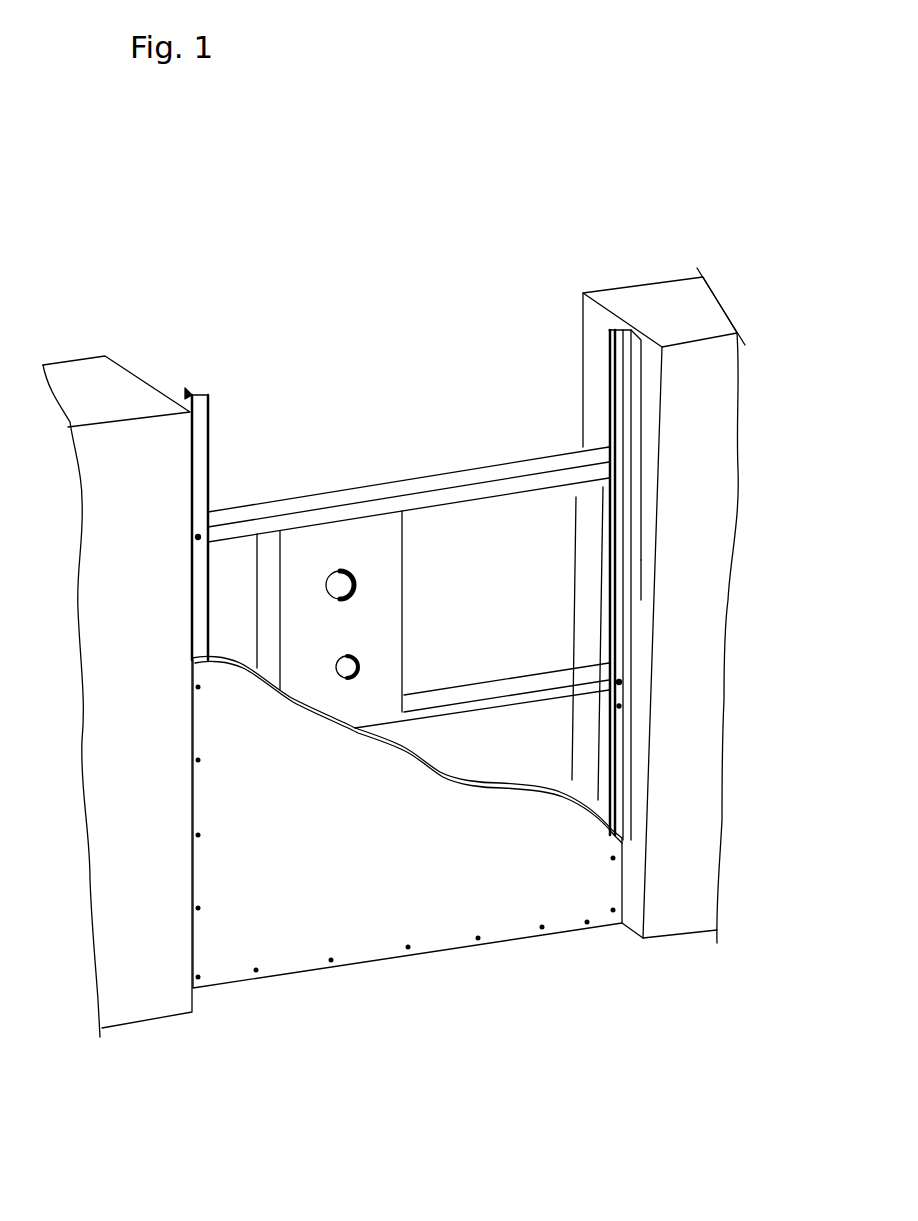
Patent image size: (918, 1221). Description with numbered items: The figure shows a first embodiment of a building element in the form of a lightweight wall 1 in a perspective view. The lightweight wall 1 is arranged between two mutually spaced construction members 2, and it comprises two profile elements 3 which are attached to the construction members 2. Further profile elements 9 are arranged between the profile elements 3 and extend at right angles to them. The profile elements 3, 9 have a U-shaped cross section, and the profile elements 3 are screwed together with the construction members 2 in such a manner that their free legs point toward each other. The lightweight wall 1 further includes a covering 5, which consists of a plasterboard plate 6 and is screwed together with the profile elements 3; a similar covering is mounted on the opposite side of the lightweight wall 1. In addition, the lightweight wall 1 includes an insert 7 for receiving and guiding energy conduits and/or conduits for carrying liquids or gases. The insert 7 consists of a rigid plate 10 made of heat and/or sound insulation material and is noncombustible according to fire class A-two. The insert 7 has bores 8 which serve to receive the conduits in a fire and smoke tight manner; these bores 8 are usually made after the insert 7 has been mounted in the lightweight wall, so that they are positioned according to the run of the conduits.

The lightweight wall 1 is at (444, 378).
The construction members 2 is at (92, 388).
The profile elements 3 is at (205, 443).
The covering 5 is at (638, 776).
The plasterboard plate 6 is at (362, 933).
The insert 7 is at (422, 590).
The bores 8 is at (356, 578).
The profile elements 9 is at (387, 493).
The rigid plate 10 is at (383, 683).